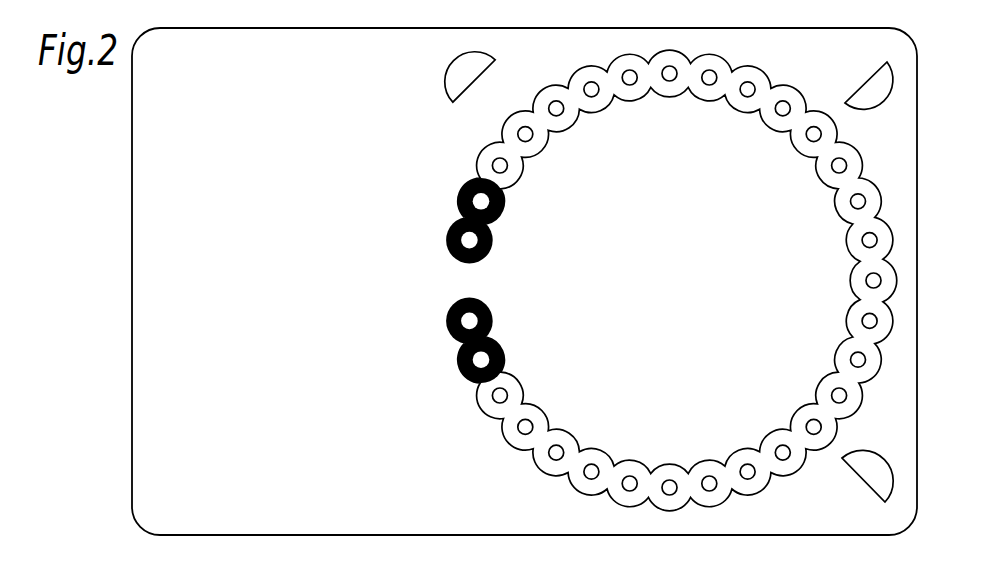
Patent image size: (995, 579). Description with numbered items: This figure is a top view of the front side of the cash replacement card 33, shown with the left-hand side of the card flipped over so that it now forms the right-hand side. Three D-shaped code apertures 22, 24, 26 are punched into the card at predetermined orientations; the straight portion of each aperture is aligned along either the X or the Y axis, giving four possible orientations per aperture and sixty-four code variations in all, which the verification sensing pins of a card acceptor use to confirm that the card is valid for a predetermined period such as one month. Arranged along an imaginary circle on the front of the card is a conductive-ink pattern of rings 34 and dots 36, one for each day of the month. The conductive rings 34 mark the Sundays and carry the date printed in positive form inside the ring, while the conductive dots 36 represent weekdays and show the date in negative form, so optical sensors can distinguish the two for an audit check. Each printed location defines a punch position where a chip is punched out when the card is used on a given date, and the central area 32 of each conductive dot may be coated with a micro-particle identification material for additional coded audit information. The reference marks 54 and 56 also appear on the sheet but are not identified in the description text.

The corner locating notch 22 is at (870, 88).
The corner locating notch 24 is at (865, 472).
The corner locating notch 26 is at (475, 60).
The circular array of apertures 32 is at (677, 280).
The plate 33 is at (607, 535).
The filled marker disc 34 is at (436, 318).
The filled marker disc 36 is at (437, 241).
The reference mark 54 is at (382, 0).
The reference mark 56 is at (467, 0).